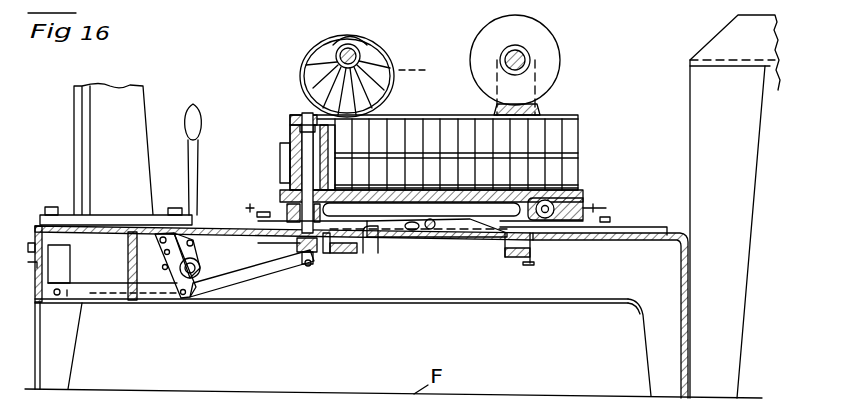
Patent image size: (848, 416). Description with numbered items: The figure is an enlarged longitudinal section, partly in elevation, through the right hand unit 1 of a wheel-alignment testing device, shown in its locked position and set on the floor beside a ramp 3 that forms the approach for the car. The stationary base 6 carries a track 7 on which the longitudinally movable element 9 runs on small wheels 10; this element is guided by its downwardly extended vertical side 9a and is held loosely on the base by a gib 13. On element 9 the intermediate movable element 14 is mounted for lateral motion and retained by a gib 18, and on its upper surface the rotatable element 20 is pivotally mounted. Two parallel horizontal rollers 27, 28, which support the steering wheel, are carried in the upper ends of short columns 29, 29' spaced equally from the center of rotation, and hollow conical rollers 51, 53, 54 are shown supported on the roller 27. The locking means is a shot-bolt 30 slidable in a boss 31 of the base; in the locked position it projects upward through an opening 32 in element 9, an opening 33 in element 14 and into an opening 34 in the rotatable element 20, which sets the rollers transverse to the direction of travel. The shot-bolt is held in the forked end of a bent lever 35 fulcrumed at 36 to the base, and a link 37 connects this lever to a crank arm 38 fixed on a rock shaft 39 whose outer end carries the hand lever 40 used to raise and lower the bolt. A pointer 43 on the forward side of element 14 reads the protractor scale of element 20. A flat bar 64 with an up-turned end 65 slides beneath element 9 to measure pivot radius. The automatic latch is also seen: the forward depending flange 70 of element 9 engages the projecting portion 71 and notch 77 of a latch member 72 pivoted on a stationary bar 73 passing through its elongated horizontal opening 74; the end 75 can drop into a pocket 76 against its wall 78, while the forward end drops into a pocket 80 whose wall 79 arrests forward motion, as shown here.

The right hand unit 1 is at (358, 312).
The ramp 3 is at (770, 55).
The stationary base 6 is at (585, 289).
The track 7 is at (634, 226).
The longitudinally movable element 9 is at (583, 194).
The vertical side 9a is at (562, 216).
The small wheel 10 is at (583, 202).
The gib 13 is at (280, 212).
The intermediate movable element 14 is at (570, 173).
The gib 18 is at (425, 210).
The rotatable element 20 is at (560, 137).
The roller 27 is at (368, 45).
The roller 28 is at (530, 53).
The short column 29 is at (547, 87).
The short column 29' is at (422, 71).
The shot-bolt 30 is at (300, 256).
The boss 31 is at (297, 245).
The opening 32 is at (289, 183).
The opening 33 is at (289, 147).
The opening 34 is at (290, 115).
The bent lever 35 is at (238, 283).
The fulcrum 36 is at (58, 290).
The link 37 is at (173, 282).
The crank arm 38 is at (194, 244).
The rock shaft 39 is at (193, 299).
The hand lever 40 is at (186, 190).
The pointer 43 is at (281, 163).
The spokes 51 is at (403, 108).
The hub 53 is at (397, 93).
The roll rim 54 is at (377, 58).
The flat bar 64 is at (268, 229).
The up-turned end 65 is at (247, 221).
The forward depending flange 70 is at (288, 206).
The projecting portion 71 is at (393, 243).
The latch member 72 is at (448, 240).
The stationary bar 73 is at (433, 232).
The elongated horizontal opening 74 is at (422, 231).
The end of latch 75 is at (490, 240).
The pocket 76 is at (533, 244).
The notch 77 is at (379, 254).
The wall 78 is at (537, 257).
The wall 79 is at (322, 255).
The pocket 80 is at (344, 252).